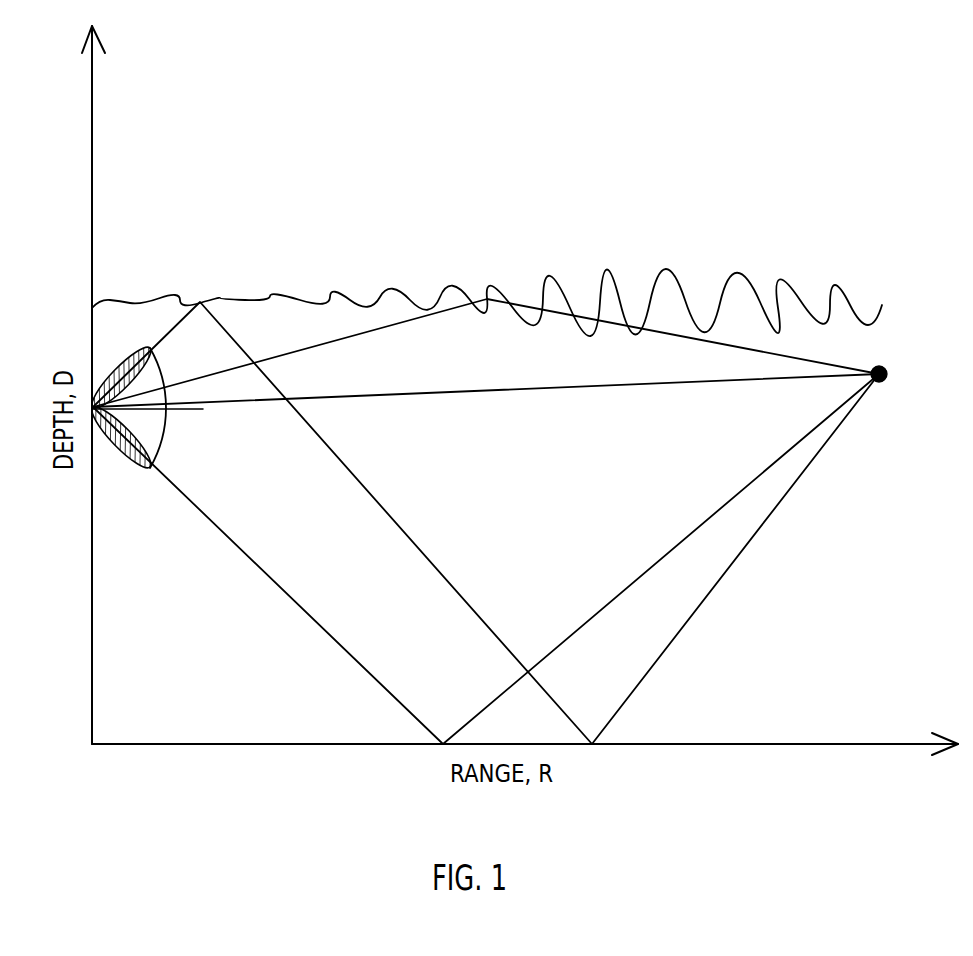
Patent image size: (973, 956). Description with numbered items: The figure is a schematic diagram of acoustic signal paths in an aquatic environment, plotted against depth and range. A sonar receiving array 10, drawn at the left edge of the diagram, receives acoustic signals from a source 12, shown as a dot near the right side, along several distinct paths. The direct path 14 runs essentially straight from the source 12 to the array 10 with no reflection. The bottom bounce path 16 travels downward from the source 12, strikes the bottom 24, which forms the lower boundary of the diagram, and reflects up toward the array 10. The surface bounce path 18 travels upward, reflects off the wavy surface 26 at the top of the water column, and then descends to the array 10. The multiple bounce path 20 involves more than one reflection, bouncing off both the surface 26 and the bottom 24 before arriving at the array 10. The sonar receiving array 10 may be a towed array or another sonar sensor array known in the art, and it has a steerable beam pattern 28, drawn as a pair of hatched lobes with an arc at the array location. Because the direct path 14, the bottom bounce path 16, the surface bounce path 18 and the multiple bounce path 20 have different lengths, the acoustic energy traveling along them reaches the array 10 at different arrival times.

The sonar receiving array 10 is at (183, 354).
The source 12 is at (885, 367).
The direct path 14 is at (488, 392).
The bottom bounce path 16 is at (637, 577).
The surface bounce path 18 is at (382, 330).
The multiple bounce path 20 is at (365, 488).
The bottom 24 is at (207, 744).
The surface 26 is at (685, 300).
The steerable beam pattern 28 is at (132, 353).